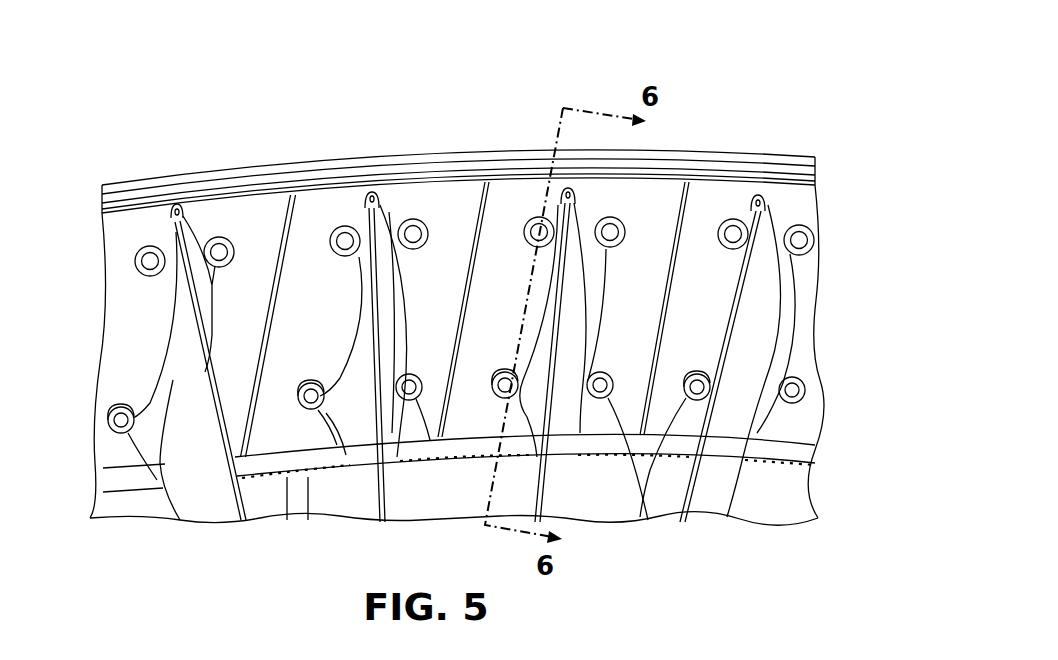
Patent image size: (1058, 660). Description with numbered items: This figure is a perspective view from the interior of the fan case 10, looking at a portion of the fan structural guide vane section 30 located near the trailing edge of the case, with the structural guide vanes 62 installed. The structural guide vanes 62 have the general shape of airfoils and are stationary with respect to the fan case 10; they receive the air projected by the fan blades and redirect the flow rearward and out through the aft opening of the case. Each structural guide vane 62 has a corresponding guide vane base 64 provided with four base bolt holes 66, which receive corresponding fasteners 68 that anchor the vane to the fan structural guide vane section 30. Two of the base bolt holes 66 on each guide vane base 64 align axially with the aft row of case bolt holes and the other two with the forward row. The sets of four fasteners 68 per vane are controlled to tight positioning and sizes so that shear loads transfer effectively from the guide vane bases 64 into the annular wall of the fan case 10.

The fan case 10 is at (266, 66).
The fan structural guide vane section 30 is at (263, 466).
The structural guide vane 62 is at (752, 360).
The guide vane base 64 is at (262, 222).
The base bolt hole 66 is at (147, 254).
The fastener 68 is at (219, 250).